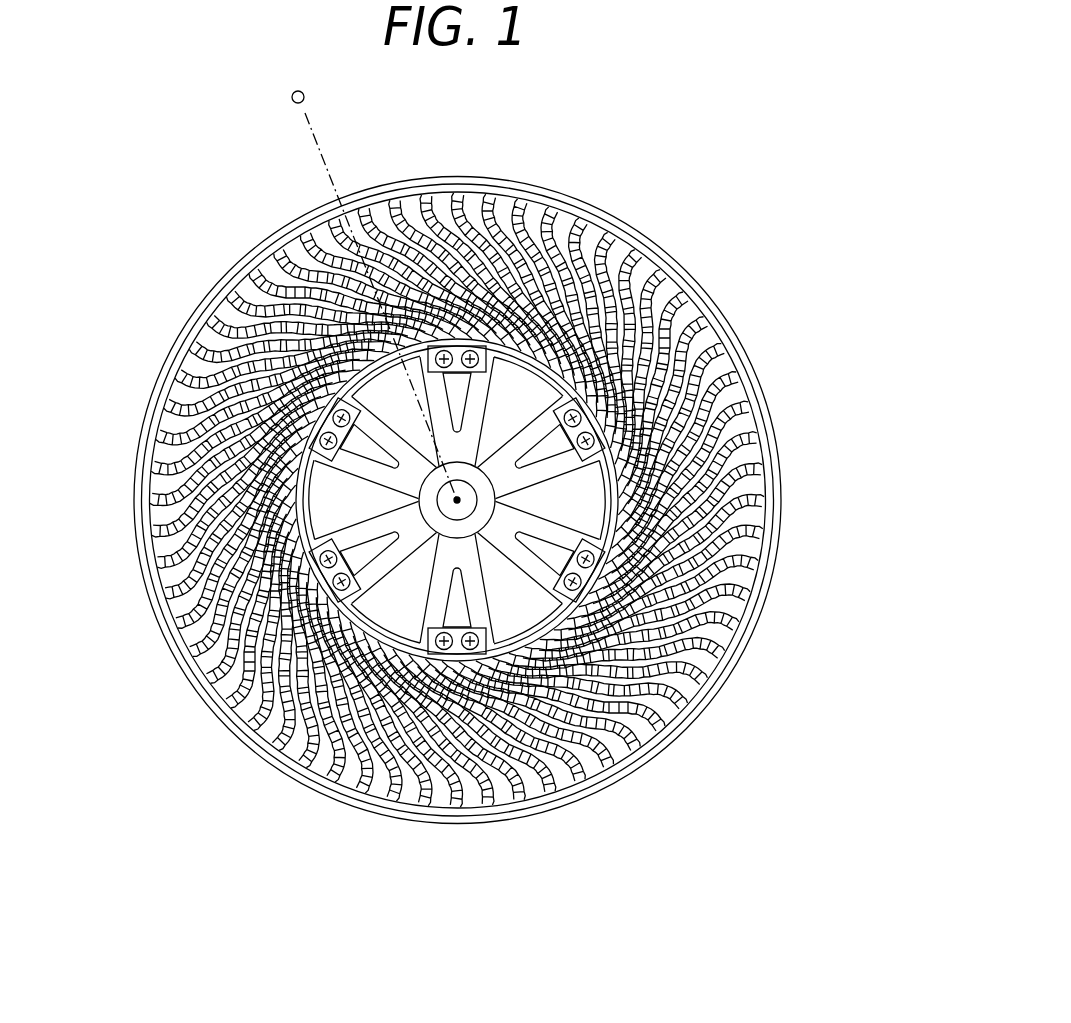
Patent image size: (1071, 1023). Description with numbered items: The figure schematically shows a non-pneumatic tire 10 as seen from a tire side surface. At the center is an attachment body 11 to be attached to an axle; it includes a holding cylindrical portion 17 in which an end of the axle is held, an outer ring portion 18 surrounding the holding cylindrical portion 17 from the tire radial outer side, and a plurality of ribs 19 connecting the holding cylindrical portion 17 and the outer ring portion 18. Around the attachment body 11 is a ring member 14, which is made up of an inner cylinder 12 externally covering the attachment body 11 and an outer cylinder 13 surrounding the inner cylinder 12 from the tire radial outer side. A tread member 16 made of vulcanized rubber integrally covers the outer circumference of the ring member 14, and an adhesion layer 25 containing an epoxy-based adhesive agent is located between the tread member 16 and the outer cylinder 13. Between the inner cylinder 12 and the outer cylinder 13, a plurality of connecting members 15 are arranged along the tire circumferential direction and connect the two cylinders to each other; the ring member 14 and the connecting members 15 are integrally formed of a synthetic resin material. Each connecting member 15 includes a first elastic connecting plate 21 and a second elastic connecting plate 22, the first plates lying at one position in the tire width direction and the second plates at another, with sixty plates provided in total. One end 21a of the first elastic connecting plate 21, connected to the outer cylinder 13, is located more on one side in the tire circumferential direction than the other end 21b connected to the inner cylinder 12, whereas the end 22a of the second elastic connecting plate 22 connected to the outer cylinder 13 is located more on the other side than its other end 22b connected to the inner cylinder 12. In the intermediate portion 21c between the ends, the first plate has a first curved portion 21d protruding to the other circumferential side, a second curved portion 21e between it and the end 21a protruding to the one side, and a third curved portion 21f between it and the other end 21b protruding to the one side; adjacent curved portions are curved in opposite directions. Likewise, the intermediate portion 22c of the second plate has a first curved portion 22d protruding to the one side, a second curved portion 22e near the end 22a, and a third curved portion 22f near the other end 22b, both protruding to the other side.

The non-pneumatic tire 10 is at (690, 182).
The attachment body 11 is at (826, 425).
The inner cylinder 12 is at (507, 347).
The outer cylinder 13 is at (606, 228).
The ring member 14 is at (542, 115).
The connecting member 15 is at (174, 172).
The tread member 16 is at (463, 178).
The holding cylindrical portion 17 is at (493, 500).
The outer ring portion 18 is at (618, 482).
The rib 19 is at (553, 525).
The first elastic connecting plate 21 is at (297, 250).
The second elastic connecting plate 22 is at (255, 278).
The end of first elastic connecting plate 21a is at (312, 773).
The other end of first elastic connecting plate 21b is at (310, 518).
The intermediate portion of first elastic connecting plate 21c is at (270, 682).
The first curved portion 21d is at (730, 638).
The second curved portion 21e is at (723, 662).
The third curved portion 21f is at (625, 745).
The end of second elastic connecting plate 22a is at (168, 452).
The other end of second elastic connecting plate 22b is at (333, 552).
The intermediate portion of second elastic connecting plate 22c is at (265, 752).
The first curved portion 22d is at (665, 640).
The second curved portion 22e is at (717, 683).
The third curved portion 22f is at (680, 690).
The adhesion layer 25 is at (742, 354).